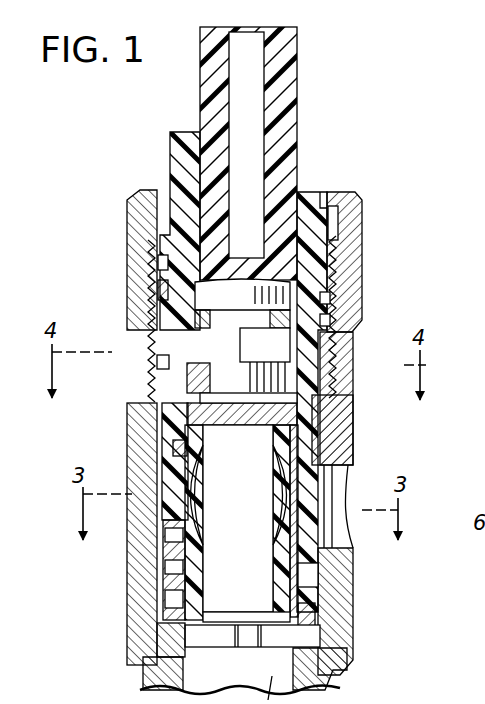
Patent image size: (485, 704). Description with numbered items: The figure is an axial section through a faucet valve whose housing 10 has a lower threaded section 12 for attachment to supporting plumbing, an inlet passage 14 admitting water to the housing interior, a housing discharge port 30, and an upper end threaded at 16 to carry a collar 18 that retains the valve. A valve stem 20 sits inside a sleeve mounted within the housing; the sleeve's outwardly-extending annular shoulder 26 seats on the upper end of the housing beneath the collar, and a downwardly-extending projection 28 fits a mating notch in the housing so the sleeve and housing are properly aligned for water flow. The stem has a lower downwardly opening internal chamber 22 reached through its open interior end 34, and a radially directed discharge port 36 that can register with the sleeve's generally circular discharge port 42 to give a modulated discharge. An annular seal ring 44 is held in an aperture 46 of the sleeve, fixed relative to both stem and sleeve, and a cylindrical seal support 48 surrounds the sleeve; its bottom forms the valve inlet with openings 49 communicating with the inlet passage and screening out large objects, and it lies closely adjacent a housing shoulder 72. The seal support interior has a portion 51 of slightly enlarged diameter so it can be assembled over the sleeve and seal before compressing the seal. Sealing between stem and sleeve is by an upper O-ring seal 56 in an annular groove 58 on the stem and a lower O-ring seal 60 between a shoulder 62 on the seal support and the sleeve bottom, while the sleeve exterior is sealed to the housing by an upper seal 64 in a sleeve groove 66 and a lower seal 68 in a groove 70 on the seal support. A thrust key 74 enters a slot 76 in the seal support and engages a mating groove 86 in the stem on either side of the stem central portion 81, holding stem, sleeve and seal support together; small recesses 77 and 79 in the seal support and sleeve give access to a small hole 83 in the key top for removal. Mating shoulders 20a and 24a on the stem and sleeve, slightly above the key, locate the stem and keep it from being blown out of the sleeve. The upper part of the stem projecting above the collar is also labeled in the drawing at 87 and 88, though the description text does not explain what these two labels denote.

The valve housing 10 is at (128, 630).
The lower threaded section 12 is at (328, 688).
The inlet passage 14 is at (291, 690).
The threaded upper end 16 is at (345, 380).
The collar 18 is at (355, 200).
The valve stem 20 is at (297, 152).
The stem shoulder 20a is at (290, 330).
The internal chamber 22 is at (238, 518).
The sleeve shoulder 24a is at (340, 346).
The annular shoulder 26 is at (150, 219).
The downwardly-extending projection 28 is at (338, 240).
The housing discharge port 30 is at (350, 530).
The interior end 34 is at (246, 610).
The stem discharge port 36 is at (206, 500).
The circular discharge port 42 is at (275, 535).
The annular seal ring 44 is at (170, 532).
The aperture 46 is at (175, 495).
The cylindrical seal support 48 is at (320, 440).
The openings 49 is at (248, 636).
The enlarged interior diameter portion 51 is at (173, 448).
The upper O-ring seal 56 is at (330, 300).
The annular groove 58 is at (330, 324).
The lower O-ring seal 60 is at (170, 567).
The shoulder 62 is at (170, 594).
The upper seal 64 is at (160, 262).
The sleeve groove 66 is at (158, 286).
The lower seal 68 is at (315, 578).
The groove 70 is at (315, 620).
The housing shoulder 72 is at (165, 660).
The thrust key 74 is at (318, 448).
The slot 76 is at (165, 412).
The recess 77 is at (150, 344).
The recess 79 is at (157, 362).
The stem central portion 81 is at (242, 395).
The small hole 83 is at (187, 378).
The mating groove 86 is at (297, 388).
The bore 87 is at (200, 92).
The shoulder 88 is at (170, 158).